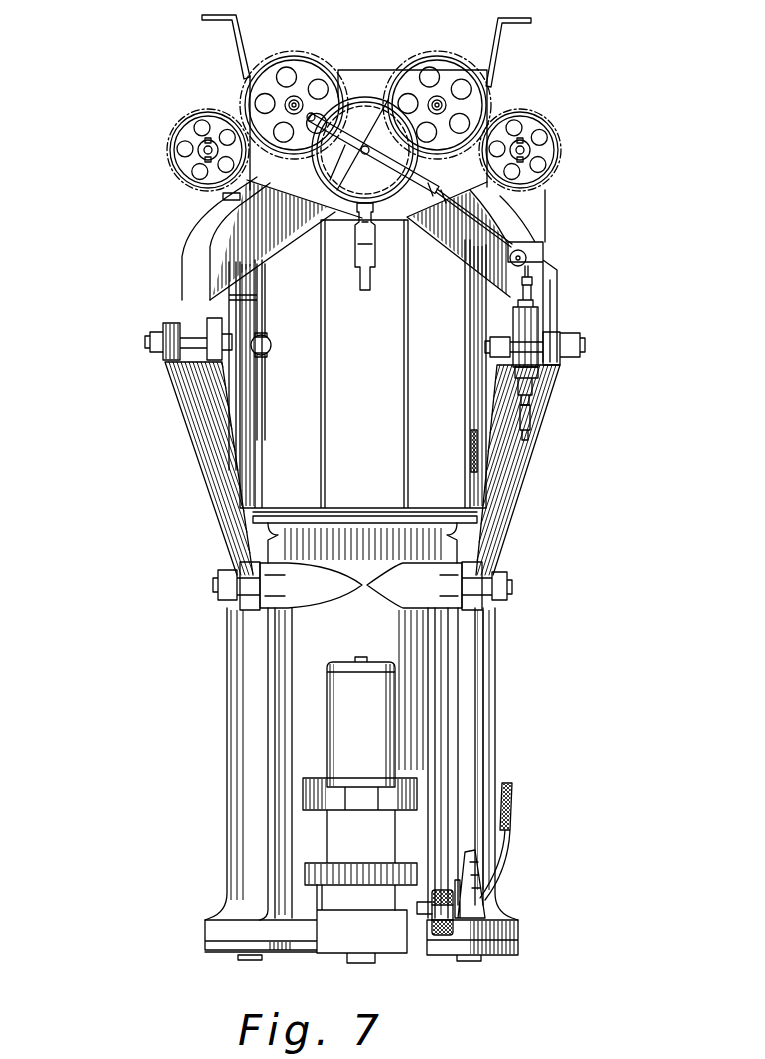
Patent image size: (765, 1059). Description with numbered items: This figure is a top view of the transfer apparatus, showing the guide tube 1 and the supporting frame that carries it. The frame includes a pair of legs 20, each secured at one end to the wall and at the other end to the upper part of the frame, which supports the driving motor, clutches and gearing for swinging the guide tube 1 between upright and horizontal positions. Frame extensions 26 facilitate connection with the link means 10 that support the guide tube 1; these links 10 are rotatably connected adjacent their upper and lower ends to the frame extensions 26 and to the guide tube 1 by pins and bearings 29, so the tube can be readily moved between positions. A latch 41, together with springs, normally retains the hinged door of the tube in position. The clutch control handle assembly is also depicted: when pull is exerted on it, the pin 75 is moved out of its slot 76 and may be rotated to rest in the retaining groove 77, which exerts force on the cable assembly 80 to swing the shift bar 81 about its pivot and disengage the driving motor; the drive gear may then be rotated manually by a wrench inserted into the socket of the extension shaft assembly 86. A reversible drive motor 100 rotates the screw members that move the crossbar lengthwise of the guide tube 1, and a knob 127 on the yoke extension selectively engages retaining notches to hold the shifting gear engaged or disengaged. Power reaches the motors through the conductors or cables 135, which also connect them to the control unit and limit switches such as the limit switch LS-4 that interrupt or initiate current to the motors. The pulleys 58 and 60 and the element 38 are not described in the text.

The guide tube 1 is at (285, 688).
The link means 10 is at (213, 436).
The legs 20 is at (235, 39).
The frame extensions 26 is at (227, 219).
The pins and bearings 29 is at (150, 343).
The housing 38 is at (378, 425).
The latch 41 is at (268, 343).
The pulley 58 is at (298, 65).
The pulley 60 is at (187, 130).
The pin 75 is at (543, 385).
The slot 76 is at (547, 393).
The retaining groove 77 is at (538, 407).
The cable assembly 80 is at (481, 223).
The shift bar 81 is at (375, 157).
The extension shaft assembly 86 is at (372, 281).
The reversible drive motor 100 is at (348, 690).
The knob 127 is at (443, 935).
The conductors or cables 135 is at (510, 788).
The limit switch LS-4 is at (482, 887).